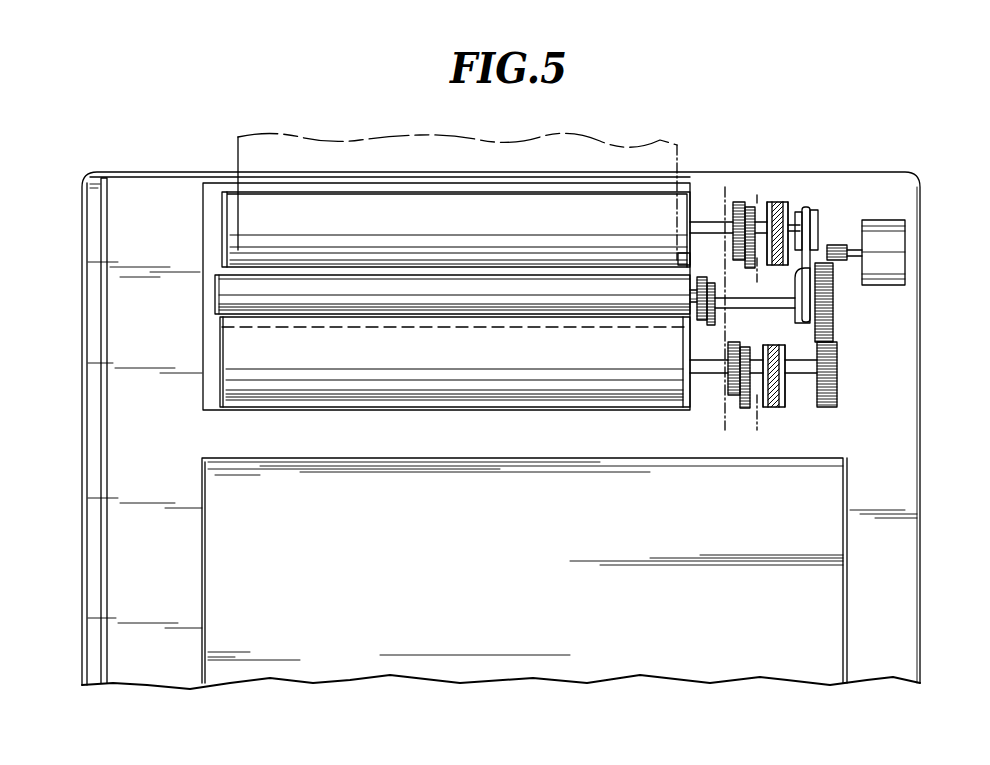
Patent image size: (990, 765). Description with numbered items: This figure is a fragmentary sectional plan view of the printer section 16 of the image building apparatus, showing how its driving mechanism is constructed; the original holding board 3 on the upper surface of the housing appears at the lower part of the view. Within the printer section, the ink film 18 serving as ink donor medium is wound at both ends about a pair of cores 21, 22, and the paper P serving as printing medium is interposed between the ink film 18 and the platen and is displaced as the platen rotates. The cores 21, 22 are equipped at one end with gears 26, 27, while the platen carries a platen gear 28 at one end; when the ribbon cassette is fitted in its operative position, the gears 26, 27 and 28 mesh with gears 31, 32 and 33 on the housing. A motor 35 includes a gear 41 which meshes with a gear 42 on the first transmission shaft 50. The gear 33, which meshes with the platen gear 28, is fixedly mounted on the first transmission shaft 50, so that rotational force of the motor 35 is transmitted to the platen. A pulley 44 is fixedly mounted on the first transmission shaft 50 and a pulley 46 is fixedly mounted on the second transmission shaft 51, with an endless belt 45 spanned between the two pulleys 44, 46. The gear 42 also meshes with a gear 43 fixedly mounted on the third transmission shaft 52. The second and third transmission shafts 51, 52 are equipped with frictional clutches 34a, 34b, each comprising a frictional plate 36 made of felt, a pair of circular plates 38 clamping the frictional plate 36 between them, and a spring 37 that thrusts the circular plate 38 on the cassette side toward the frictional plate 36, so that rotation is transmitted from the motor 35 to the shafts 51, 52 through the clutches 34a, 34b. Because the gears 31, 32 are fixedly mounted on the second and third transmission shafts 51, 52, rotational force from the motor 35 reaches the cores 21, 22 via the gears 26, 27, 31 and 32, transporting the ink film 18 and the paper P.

The printer section 16 is at (160, 198).
The ink film 18 is at (232, 320).
The core 21 is at (678, 190).
The core 22 is at (648, 398).
The gear 26 is at (728, 220).
The gear 27 is at (735, 387).
The platen gear 28 is at (700, 277).
The gear 31 is at (738, 204).
The gear 32 is at (738, 412).
The gear 33 is at (704, 328).
The frictional clutch 34a is at (790, 197).
The frictional clutch 34b is at (787, 397).
The motor 35 is at (900, 256).
The frictional plate 36 is at (778, 204).
The spring 37 is at (757, 206).
The circular plate 38 is at (771, 204).
The gear 41 is at (839, 246).
The gear 42 is at (833, 320).
The gear 43 is at (836, 366).
The pulley 44 is at (812, 273).
The endless belt 45 is at (820, 224).
The pulley 46 is at (810, 215).
The first transmission shaft 50 is at (772, 308).
The second transmission shaft 51 is at (800, 222).
The third transmission shaft 52 is at (805, 375).
The original holding board 3 is at (830, 590).
The paper P is at (535, 119).